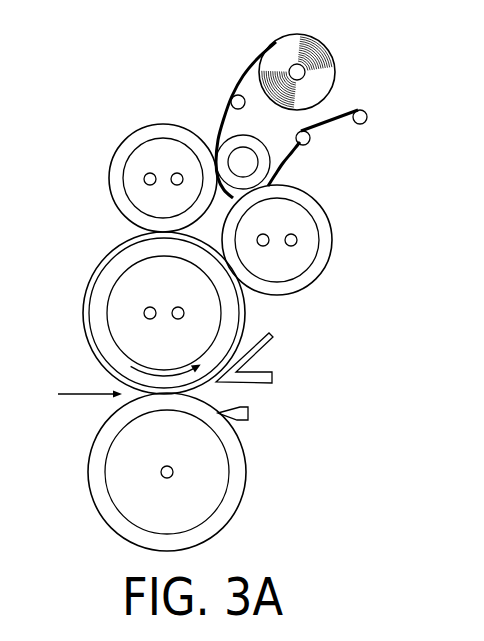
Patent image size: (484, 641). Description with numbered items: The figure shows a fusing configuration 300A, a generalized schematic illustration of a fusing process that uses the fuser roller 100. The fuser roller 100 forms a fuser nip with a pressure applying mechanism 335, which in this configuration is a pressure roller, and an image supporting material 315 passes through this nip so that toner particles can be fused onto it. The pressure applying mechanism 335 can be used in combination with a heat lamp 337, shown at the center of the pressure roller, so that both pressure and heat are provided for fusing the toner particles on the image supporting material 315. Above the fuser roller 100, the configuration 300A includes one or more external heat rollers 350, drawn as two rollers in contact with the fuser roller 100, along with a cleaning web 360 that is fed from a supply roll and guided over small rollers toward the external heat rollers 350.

The fusing configuration 300A is at (145, 76).
The cleaning web 360 is at (355, 73).
The external heat roller 350 is at (127, 140).
The fuser roller 100 is at (90, 262).
The image supporting material 315 is at (92, 396).
The pressure applying mechanism 335 is at (251, 442).
The heat lamp 337 is at (165, 479).